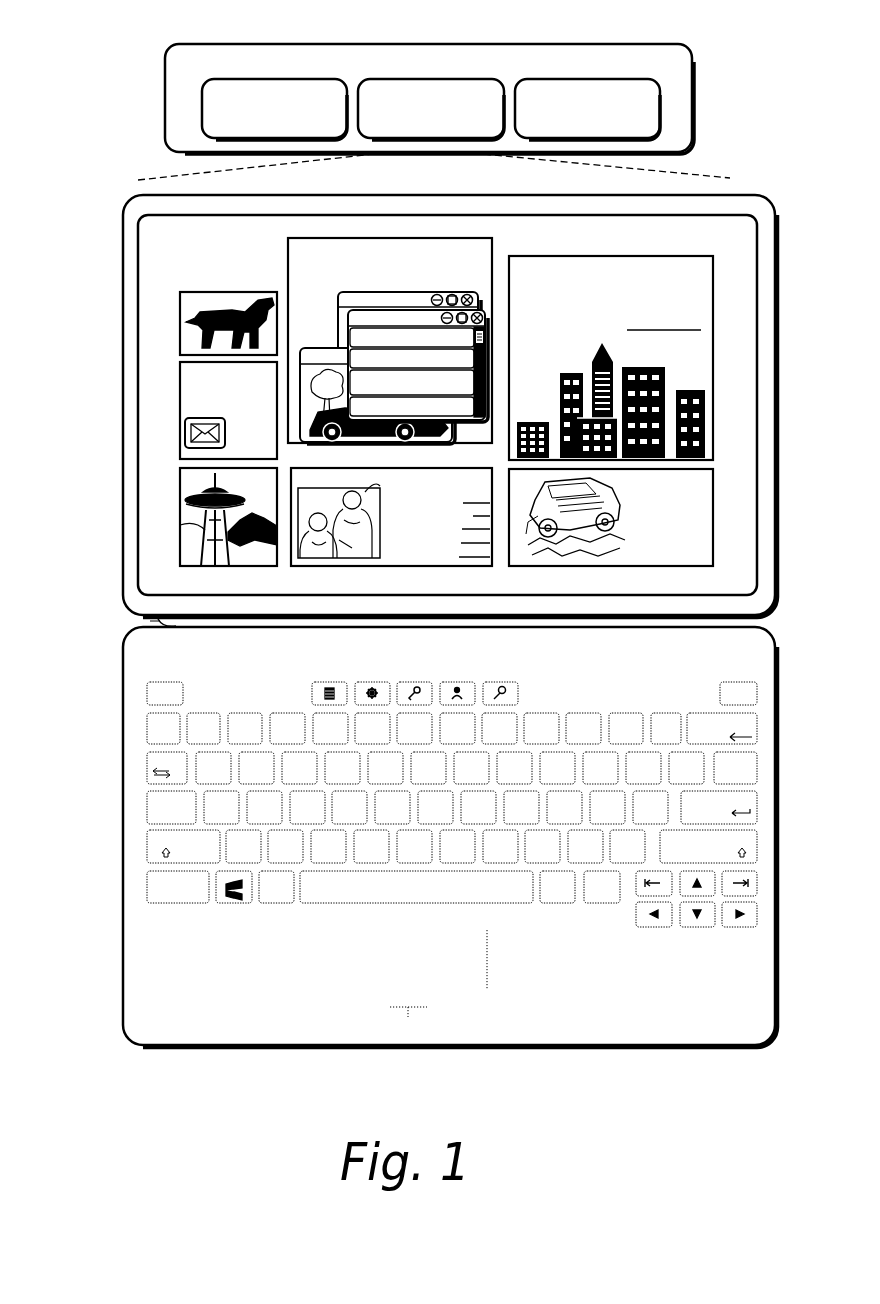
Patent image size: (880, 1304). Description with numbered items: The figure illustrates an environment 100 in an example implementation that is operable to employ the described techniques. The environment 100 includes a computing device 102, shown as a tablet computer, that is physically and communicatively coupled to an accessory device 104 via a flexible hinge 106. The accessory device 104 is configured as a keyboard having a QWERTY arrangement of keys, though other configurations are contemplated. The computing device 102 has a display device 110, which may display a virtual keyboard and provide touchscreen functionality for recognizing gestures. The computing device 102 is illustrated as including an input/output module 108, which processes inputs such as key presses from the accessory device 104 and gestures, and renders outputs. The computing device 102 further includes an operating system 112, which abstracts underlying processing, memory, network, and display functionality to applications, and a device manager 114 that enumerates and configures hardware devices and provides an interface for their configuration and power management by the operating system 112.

The environment 100 is at (149, 72).
The computing device 102 is at (527, 73).
The accessory device 104 is at (122, 840).
The flexible hinge 106 is at (122, 620).
The input/output module 108 is at (322, 131).
The display device 110 is at (150, 400).
The operating system 112 is at (480, 131).
The device manager 114 is at (645, 131).